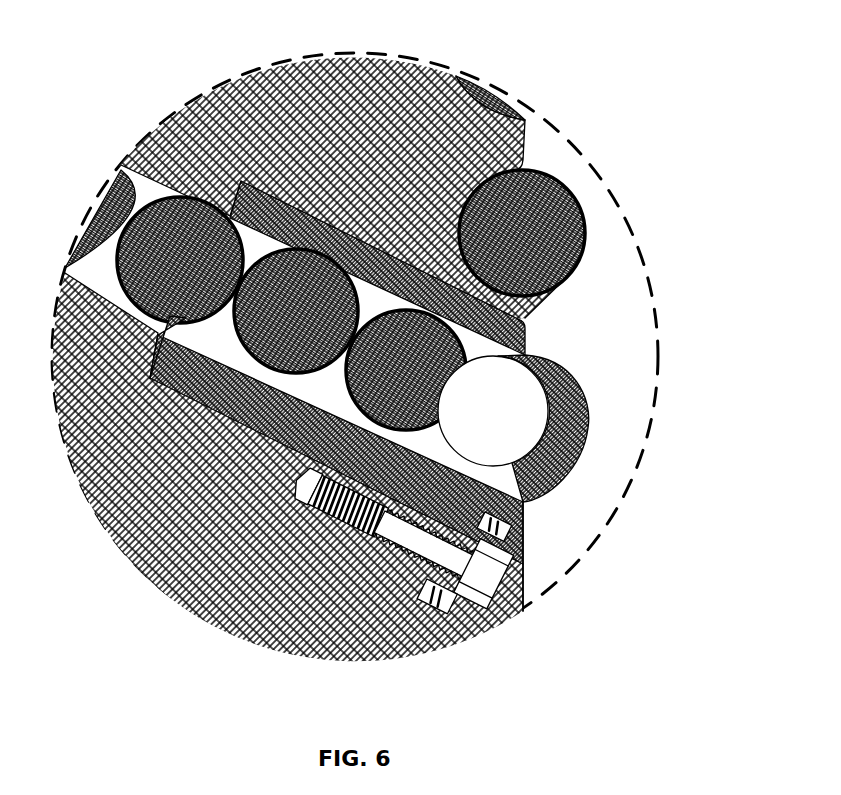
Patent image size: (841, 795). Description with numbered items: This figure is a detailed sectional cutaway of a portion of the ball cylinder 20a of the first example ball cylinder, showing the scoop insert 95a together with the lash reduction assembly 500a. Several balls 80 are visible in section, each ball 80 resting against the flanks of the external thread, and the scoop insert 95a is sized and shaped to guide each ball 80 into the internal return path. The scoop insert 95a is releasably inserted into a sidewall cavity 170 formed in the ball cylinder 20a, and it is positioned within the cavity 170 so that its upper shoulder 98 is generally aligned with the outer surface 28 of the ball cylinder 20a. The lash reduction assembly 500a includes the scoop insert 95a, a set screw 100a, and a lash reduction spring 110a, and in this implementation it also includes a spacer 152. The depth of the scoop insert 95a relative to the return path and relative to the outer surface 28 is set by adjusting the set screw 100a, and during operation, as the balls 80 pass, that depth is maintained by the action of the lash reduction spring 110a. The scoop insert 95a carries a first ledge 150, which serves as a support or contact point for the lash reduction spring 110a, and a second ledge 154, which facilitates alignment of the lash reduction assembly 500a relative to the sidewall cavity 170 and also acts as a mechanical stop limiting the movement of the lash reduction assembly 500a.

The ball cylinder 20a is at (467, 37).
The outer surface 28 is at (520, 137).
The ball 80 is at (556, 178).
The scoop insert 95a is at (550, 357).
The upper shoulder 98 is at (515, 495).
The set screw 100a is at (500, 598).
The lash reduction spring 110a is at (430, 615).
The first ledge 150 is at (520, 518).
The spacer 152 is at (458, 455).
The second ledge 154 is at (385, 483).
The sidewall cavity 170 is at (237, 174).
The lash reduction assembly 500a is at (655, 528).